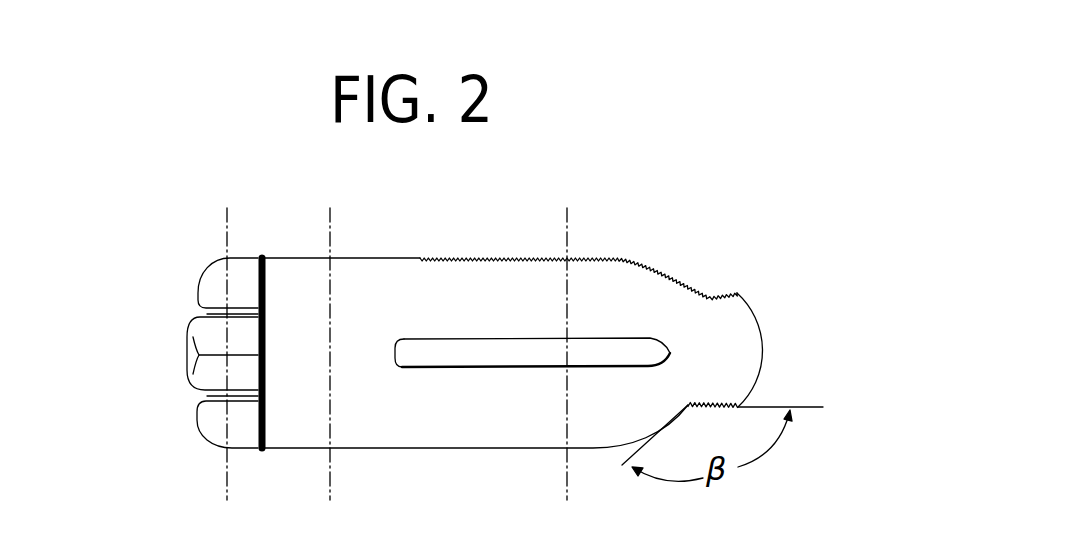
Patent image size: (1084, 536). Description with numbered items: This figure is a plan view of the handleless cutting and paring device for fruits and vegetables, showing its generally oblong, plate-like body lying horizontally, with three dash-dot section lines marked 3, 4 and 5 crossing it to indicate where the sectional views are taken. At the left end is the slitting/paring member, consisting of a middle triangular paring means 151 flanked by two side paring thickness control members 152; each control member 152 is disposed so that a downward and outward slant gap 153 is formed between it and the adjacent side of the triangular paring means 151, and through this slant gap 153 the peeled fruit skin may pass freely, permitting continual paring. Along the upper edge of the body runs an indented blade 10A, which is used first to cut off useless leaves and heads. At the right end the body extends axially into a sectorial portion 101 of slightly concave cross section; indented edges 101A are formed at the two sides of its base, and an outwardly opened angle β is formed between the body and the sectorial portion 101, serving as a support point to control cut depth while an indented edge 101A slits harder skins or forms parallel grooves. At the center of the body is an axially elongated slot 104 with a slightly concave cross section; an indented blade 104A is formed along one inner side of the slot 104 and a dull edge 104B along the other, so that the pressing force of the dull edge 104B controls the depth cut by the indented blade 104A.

The section line 3- 3 is at (227, 222).
The section line 4- 4 is at (330, 222).
The section line 5- 5 is at (567, 222).
The indented blade 10A is at (471, 258).
The sectorial portion 101 is at (763, 335).
The indented edges 101A is at (713, 292).
The axially elongated slot 104 is at (503, 357).
The indented blade 104A is at (491, 370).
The dull edge 104B is at (470, 342).
The triangular paring means 151 is at (190, 364).
The paring thickness control members 152 is at (204, 289).
The slant gap 153 is at (210, 312).